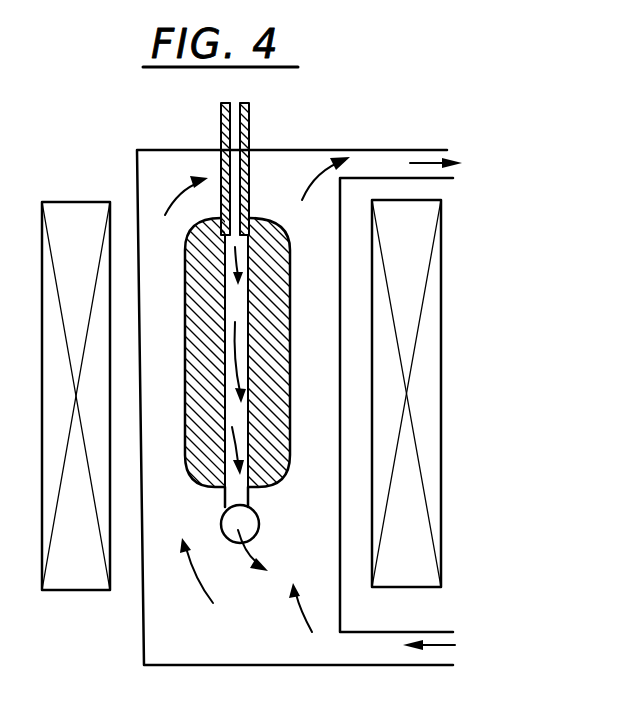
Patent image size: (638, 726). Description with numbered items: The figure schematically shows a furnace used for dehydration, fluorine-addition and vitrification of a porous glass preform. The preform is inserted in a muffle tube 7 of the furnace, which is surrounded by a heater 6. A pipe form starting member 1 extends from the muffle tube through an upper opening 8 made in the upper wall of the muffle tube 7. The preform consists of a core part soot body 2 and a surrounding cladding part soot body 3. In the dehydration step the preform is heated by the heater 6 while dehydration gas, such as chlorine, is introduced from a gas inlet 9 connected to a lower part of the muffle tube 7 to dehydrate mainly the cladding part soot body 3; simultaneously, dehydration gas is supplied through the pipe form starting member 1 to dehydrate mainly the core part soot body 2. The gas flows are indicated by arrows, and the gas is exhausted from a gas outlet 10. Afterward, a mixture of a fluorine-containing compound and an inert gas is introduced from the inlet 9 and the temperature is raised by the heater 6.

The pipe form starting member 1 is at (221, 140).
The core part soot body 2 is at (237, 300).
The cladding part soot body 3 is at (205, 345).
The heater 6 is at (428, 383).
The muffle tube 7 is at (137, 188).
The upper opening 8 is at (249, 140).
The gas inlet 9 is at (367, 648).
The gas outlet 10 is at (368, 160).